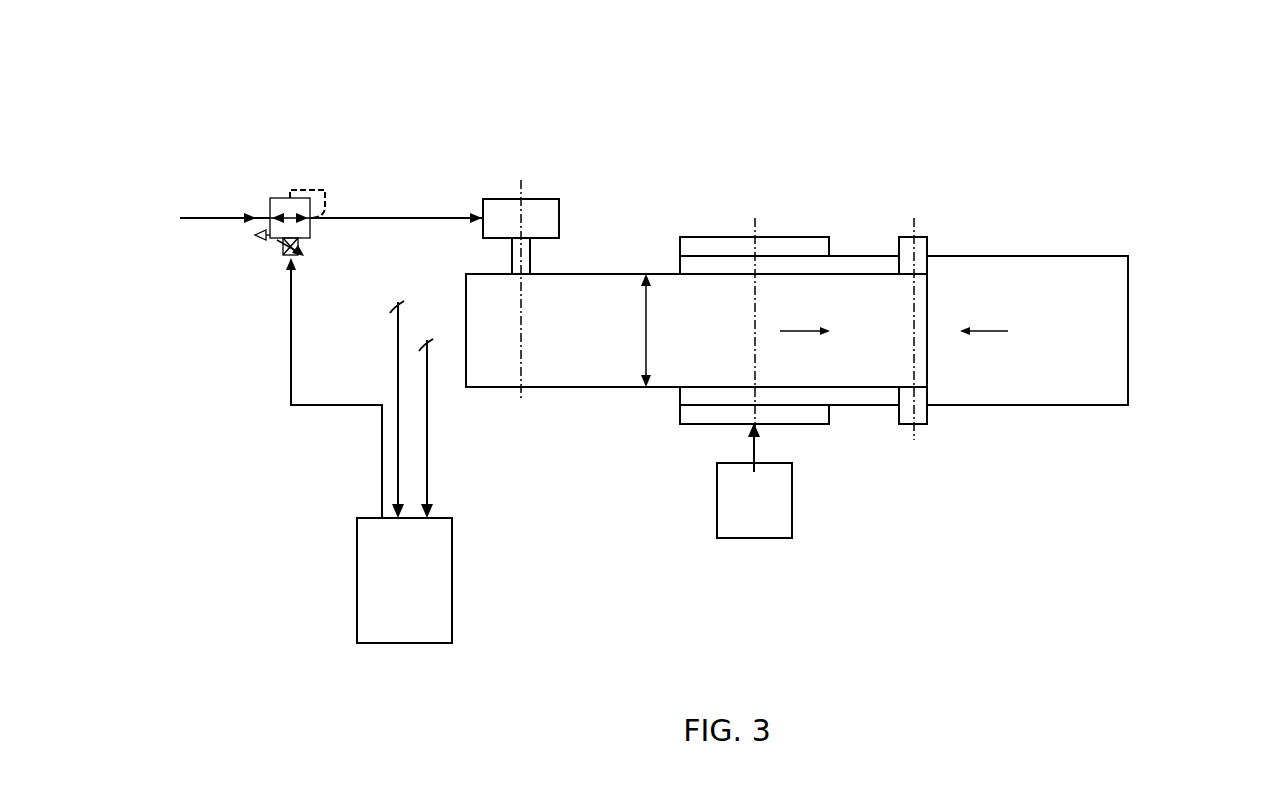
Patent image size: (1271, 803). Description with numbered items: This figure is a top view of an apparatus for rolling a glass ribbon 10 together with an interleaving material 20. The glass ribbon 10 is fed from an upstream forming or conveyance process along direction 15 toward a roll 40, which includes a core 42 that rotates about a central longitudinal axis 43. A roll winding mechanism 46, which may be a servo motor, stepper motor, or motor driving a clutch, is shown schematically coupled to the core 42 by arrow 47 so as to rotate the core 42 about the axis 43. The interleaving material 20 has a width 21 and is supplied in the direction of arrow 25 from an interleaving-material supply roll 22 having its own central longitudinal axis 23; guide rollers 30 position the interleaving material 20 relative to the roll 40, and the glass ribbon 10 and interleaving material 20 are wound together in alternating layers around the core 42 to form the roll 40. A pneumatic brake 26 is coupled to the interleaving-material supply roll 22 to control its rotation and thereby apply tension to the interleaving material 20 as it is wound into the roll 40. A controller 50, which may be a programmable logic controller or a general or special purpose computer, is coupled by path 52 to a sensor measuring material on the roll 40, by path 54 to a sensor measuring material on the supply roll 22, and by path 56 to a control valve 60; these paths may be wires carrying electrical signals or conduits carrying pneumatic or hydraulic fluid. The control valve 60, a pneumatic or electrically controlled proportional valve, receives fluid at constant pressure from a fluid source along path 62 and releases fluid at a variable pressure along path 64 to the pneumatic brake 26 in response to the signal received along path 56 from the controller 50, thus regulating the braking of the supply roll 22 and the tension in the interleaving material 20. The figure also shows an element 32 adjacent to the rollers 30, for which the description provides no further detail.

The glass ribbon 10 is at (1085, 372).
The direction 15 is at (984, 320).
The interleaving material 20 is at (560, 345).
The width 21 is at (632, 330).
The interleaving-material supply roll 22 is at (560, 418).
The central longitudinal axis 23 is at (520, 398).
The arrow 25 is at (805, 320).
The pneumatic brake 26 is at (548, 210).
The rollers 30 is at (923, 413).
The flange axis 32 is at (913, 433).
The roll 40 is at (816, 210).
The core 42 is at (737, 243).
The central longitudinal axis 43 is at (758, 222).
The roll winding mechanism 46 is at (780, 522).
The arrow 47 is at (754, 444).
The controller 50 is at (388, 597).
The path 52 is at (427, 457).
The path 54 is at (397, 360).
The path 56 is at (288, 342).
The control valve 60 is at (266, 185).
The path 62 is at (210, 218).
The path 64 is at (400, 218).